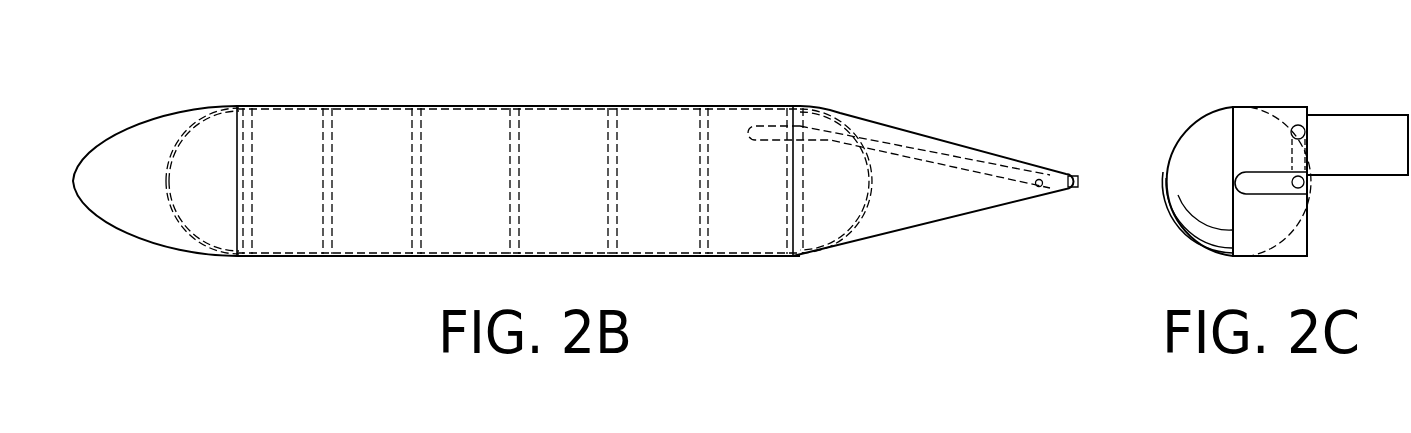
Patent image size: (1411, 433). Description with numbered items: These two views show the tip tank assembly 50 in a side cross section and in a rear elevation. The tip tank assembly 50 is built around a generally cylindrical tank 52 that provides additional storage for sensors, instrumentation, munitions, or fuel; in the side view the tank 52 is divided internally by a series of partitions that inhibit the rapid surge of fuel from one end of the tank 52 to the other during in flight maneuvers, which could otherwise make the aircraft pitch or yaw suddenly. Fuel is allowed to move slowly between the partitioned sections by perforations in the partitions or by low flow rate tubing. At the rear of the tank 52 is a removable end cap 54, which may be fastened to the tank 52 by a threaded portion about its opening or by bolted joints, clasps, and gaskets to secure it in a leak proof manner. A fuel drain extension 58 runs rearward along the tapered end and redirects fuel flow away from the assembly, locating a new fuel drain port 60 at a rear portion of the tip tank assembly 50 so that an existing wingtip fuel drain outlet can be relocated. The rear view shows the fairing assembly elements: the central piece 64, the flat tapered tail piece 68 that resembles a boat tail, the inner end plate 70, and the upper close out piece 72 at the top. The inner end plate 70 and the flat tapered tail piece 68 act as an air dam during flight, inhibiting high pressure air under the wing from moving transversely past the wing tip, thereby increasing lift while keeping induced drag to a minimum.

In FIG. 2B, the tip tank assembly 50 is at (197, 78).
In FIG. 2C, the tip tank assembly 50 is at (1172, 85).
In FIG. 2B, the tank 52 is at (308, 120).
In FIG. 2B, the removable end cap 54 is at (832, 225).
In FIG. 2B, the fuel drain extension 58 is at (912, 152).
In FIG. 2C, the fuel drain extension 58 is at (1296, 135).
In FIG. 2B, the fuel drain port 60 is at (1078, 190).
In FIG. 2C, the fuel drain port 60 is at (1307, 183).
In FIG. 2C, the central piece 64 is at (1168, 136).
In FIG. 2C, the flat tapered tail piece 68 is at (1277, 243).
In FIG. 2C, the inner end plate 70 is at (1312, 218).
In FIG. 2C, the upper close out piece 72 is at (1272, 110).